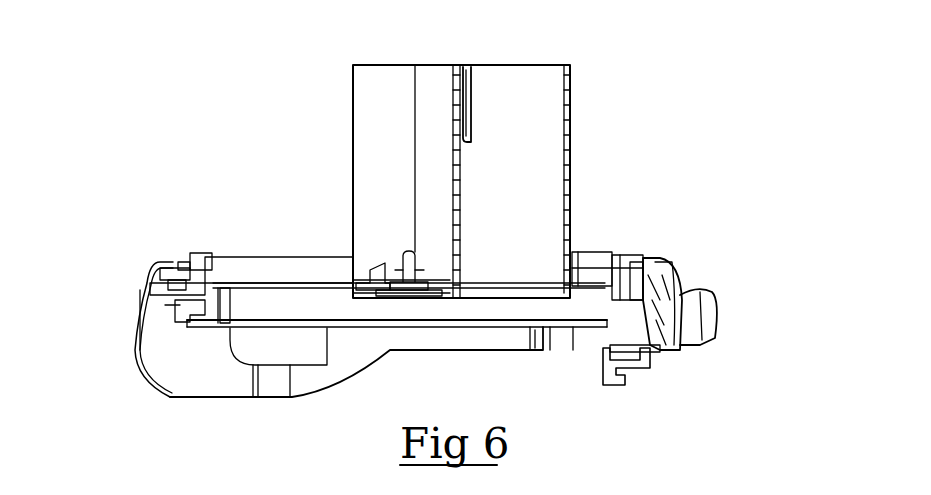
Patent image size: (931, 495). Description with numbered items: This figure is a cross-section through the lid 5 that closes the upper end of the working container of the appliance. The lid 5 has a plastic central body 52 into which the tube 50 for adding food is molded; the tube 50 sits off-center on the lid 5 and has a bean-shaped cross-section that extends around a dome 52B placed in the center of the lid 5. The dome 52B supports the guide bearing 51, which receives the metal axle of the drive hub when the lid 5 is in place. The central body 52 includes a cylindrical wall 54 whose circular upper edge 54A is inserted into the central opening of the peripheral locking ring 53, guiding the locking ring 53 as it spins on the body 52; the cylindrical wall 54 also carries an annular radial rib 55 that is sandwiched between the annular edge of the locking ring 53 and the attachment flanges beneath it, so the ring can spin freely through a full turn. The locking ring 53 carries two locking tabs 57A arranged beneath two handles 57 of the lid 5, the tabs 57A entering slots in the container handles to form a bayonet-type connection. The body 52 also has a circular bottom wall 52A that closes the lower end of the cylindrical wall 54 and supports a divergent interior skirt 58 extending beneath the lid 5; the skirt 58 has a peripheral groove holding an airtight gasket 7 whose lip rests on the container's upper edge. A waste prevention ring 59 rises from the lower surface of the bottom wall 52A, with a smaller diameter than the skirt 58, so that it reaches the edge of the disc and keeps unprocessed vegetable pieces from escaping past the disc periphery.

The lid 5 is at (684, 118).
The tube 50 is at (368, 147).
The guide bearing 51 is at (395, 252).
The central body 52 is at (255, 255).
The circular bottom wall 52A is at (258, 288).
The dome 52B is at (362, 262).
The peripheral locking ring 53 is at (160, 258).
The cylindrical wall 54 is at (177, 278).
The circular upper edge 54A is at (208, 255).
The annular radial rib 55 is at (193, 255).
The handles 57 is at (702, 295).
The locking tabs 57A is at (619, 385).
The interior skirt 58 is at (177, 308).
The waste prevention ring 59 is at (563, 315).
The airtight gasket 7 is at (655, 348).